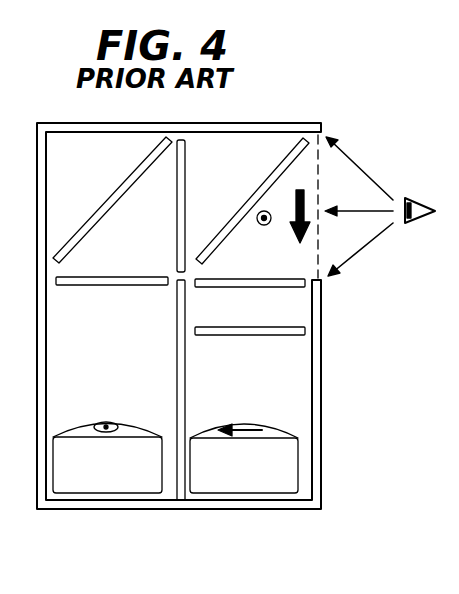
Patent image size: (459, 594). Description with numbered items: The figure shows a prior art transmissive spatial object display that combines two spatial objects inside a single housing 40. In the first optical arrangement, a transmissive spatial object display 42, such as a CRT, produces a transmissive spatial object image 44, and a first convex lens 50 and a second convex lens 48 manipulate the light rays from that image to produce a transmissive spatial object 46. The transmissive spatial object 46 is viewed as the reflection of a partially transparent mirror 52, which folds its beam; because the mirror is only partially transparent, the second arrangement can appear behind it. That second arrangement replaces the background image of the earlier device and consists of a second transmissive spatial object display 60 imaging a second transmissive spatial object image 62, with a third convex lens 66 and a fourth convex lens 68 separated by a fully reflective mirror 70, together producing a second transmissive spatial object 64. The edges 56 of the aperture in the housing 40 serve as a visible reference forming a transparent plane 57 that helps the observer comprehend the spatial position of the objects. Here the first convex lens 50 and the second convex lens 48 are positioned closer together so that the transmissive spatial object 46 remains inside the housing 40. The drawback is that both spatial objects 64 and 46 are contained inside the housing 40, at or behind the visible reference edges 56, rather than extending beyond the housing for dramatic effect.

The housing 40 is at (323, 389).
The transmissive spatial object display 42 is at (300, 470).
The transmissive spatial object image 44 is at (240, 430).
The transmissive spatial object 46 is at (306, 204).
The second convex lens 48 is at (218, 327).
The first convex lens 50 is at (247, 279).
The partially transparent mirror 52 is at (240, 206).
The edges 56 is at (322, 128).
The transparent plane 57 is at (322, 216).
The second transmissive spatial object display 60 is at (108, 493).
The second transmissive spatial object image 62 is at (106, 424).
The second transmissive spatial object 64 is at (259, 224).
The third convex lens 66 is at (133, 286).
The fourth convex lens 68 is at (177, 193).
The fully reflective mirror 70 is at (98, 205).